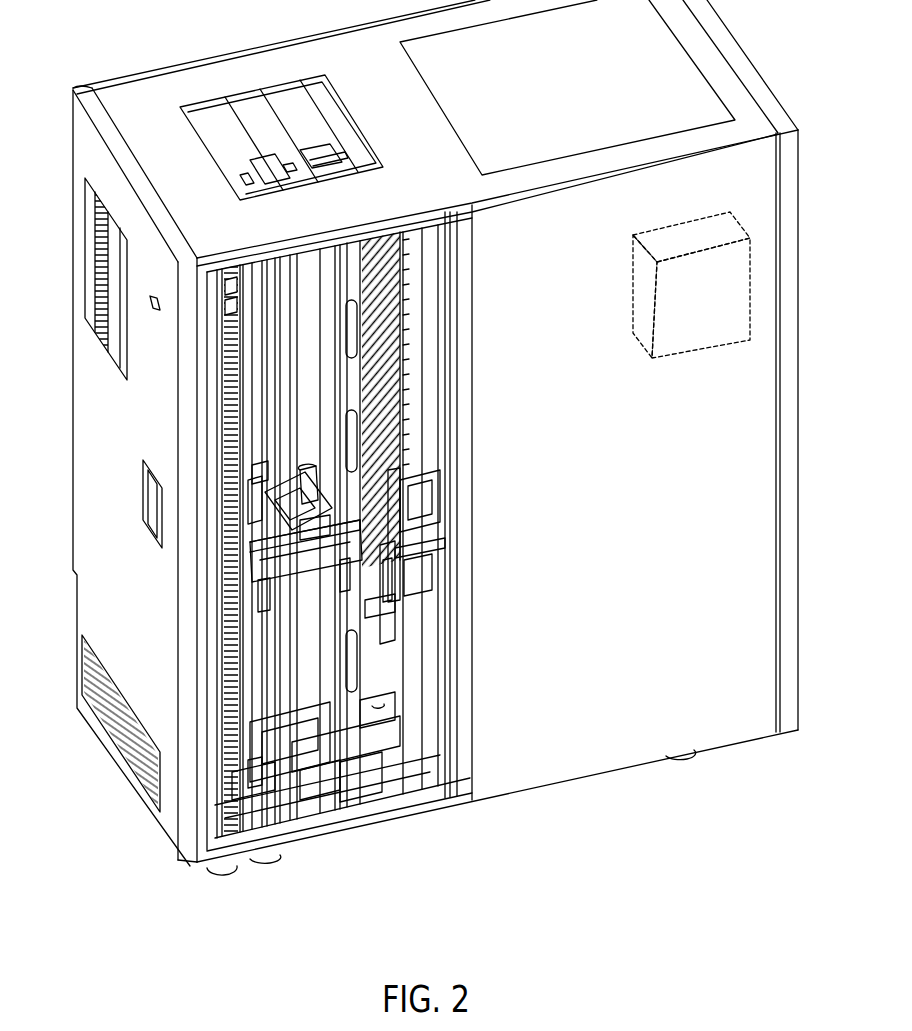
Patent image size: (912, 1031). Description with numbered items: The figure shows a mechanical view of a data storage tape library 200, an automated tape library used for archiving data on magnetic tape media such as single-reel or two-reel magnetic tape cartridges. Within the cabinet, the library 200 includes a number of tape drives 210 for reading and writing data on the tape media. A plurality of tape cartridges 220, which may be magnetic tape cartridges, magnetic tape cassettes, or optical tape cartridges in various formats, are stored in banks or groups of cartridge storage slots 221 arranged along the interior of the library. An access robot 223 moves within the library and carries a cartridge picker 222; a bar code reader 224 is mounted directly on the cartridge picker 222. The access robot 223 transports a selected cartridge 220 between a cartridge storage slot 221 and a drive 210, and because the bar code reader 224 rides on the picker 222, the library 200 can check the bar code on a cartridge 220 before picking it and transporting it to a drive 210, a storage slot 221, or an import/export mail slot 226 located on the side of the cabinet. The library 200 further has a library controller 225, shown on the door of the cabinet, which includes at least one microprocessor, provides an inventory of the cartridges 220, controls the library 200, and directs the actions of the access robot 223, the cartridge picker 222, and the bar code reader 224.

The data storage tape library 200 is at (415, 437).
The tape drive 210 is at (407, 552).
The tape cartridge 220 is at (427, 337).
The cartridge storage slot 221 is at (218, 323).
The cartridge picker 222 is at (388, 560).
The access robot 223 is at (305, 780).
The bar code reader 224 is at (222, 478).
The library controller 225 is at (633, 285).
The import/export mail slot 226 is at (110, 266).